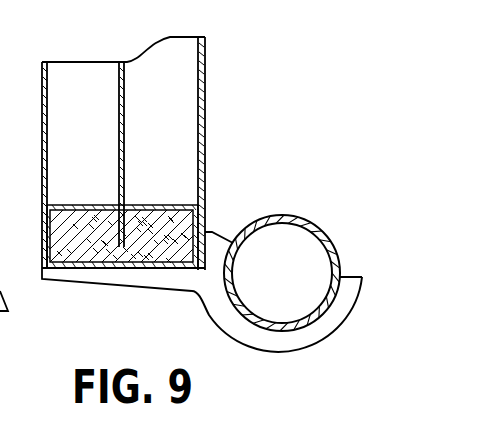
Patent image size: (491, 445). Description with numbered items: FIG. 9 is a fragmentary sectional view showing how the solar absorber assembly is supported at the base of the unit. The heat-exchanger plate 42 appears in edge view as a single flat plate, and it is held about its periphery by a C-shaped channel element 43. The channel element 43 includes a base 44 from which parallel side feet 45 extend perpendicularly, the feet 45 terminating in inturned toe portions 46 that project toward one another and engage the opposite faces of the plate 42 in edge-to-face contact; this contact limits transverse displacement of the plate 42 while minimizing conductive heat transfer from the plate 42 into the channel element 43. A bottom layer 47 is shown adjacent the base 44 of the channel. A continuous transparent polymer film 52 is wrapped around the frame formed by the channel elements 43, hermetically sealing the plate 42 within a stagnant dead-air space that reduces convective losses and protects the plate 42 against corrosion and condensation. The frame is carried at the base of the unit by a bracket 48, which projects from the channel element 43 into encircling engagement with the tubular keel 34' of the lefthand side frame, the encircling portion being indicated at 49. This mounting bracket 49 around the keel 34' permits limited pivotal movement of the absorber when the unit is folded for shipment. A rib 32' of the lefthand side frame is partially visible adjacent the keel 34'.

The transparent polymer film 52 is at (47, 100).
The heat-exchanger plate 42 is at (123, 143).
The C-shaped channel element 43 is at (212, 180).
The inturned toe portion 46 is at (72, 206).
The side foot 45 is at (45, 243).
The bottom layer 47 is at (80, 269).
The base 44 is at (118, 264).
The bracket 48 is at (220, 316).
The mounting bracket 49 is at (328, 337).
The keel 34' is at (288, 267).
The rib 32' is at (13, 315).